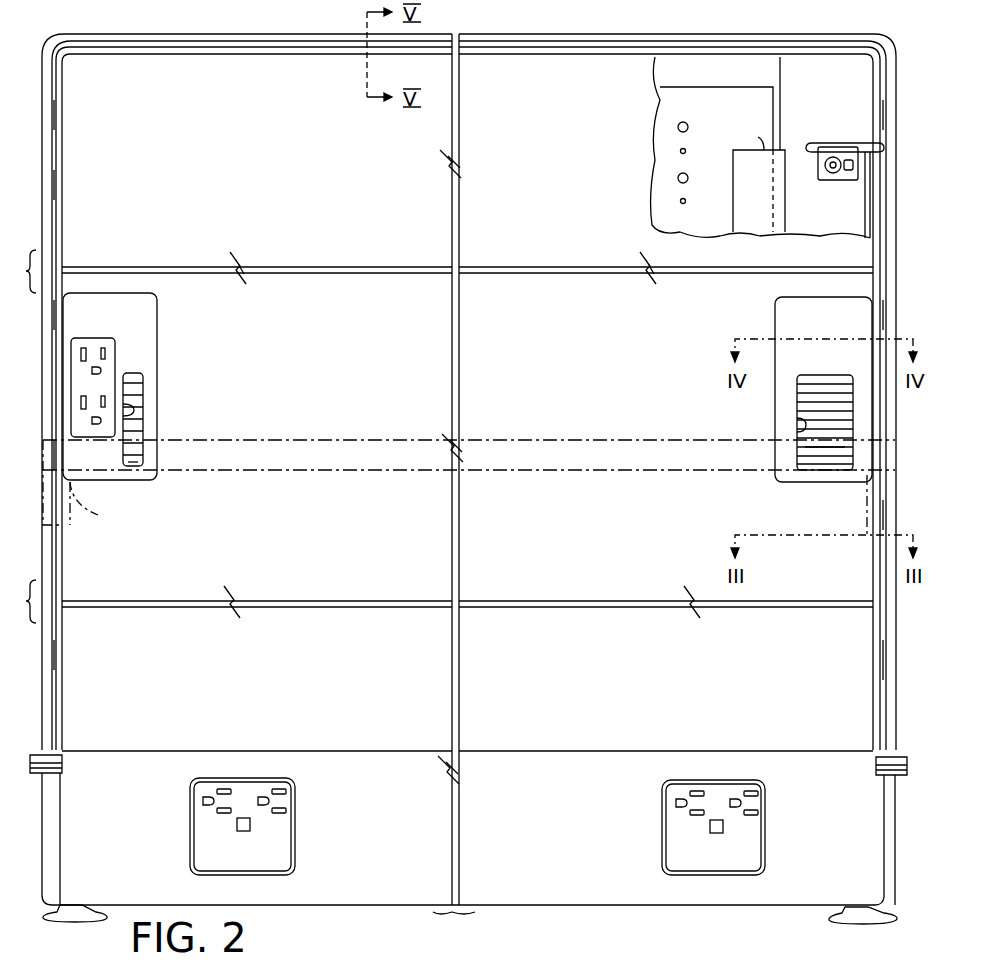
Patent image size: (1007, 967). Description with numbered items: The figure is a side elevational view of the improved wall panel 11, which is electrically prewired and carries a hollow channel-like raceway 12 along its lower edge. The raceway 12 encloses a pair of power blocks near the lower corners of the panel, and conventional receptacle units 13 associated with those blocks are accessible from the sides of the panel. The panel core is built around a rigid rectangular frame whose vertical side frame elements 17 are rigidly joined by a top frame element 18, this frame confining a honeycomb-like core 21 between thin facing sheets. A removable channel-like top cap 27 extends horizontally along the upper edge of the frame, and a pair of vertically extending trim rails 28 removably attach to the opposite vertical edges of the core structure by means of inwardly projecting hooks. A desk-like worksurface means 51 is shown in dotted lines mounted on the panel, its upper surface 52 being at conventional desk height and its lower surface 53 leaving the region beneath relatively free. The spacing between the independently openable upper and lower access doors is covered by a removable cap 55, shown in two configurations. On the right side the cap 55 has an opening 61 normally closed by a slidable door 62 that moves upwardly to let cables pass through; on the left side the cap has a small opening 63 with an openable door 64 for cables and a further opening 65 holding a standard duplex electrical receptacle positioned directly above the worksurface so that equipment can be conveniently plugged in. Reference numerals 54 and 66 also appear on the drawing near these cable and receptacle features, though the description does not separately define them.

The panel 11 is at (428, 921).
The raceway 12 is at (536, 869).
The receptacle units 13 is at (255, 848).
The side frame elements 17 is at (747, 158).
The top frame element 18 is at (680, 68).
The core 21 is at (722, 98).
The top cap 27 is at (517, 44).
The trim rails 28 is at (57, 176).
The worksurface means 51 is at (581, 460).
The upper surface 52 is at (630, 440).
The lower surface 53 is at (603, 472).
The cable 54 is at (97, 507).
The cap 55 is at (790, 319).
The opening 61 is at (800, 425).
The door 62 is at (828, 450).
The small opening 63 is at (130, 408).
The openable door 64 is at (135, 445).
The further opening 65 is at (93, 340).
The duplex receptacle 66 is at (108, 366).